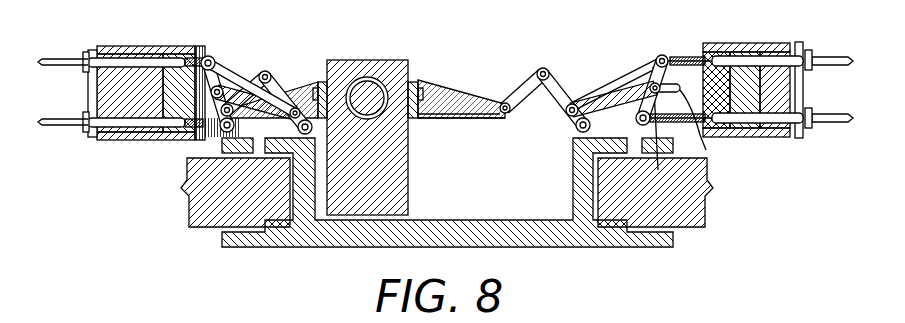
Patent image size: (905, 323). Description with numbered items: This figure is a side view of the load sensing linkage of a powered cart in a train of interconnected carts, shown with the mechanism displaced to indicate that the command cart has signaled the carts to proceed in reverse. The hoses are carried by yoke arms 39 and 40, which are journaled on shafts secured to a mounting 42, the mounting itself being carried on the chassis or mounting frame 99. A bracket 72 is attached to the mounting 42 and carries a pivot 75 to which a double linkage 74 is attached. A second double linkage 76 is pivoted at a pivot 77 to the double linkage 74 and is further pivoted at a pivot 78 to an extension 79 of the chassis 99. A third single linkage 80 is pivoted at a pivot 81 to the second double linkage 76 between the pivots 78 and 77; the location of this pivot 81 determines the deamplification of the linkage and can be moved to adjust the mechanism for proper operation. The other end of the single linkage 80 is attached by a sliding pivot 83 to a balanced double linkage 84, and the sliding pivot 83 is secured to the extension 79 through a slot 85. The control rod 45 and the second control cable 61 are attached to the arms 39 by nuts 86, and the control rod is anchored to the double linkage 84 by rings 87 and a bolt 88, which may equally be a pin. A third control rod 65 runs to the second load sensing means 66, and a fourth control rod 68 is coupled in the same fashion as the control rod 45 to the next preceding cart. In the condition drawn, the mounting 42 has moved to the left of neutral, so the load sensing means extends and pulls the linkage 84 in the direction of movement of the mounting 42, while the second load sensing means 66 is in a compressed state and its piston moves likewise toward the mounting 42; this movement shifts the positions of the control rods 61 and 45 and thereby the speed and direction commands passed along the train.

The yoke arm 39 is at (775, 92).
The yoke arm 40 is at (108, 88).
The mounting 42 is at (350, 60).
The control rod 45 is at (828, 55).
The second control cable 61 is at (830, 116).
The third control rod 65 is at (62, 130).
The second load sensing means 66 is at (432, 73).
The fourth control rod 68 is at (62, 56).
The bracket 72 is at (463, 120).
The double linkage 74 is at (513, 93).
The pivot 75 is at (504, 120).
The second double linkage 76 is at (556, 70).
The pivot 77 is at (528, 76).
The pivot 78 is at (580, 131).
The extension 79 is at (635, 85).
The third single linkage 80 is at (622, 95).
The pivot 81 is at (572, 114).
The sliding pivot 83 is at (230, 83).
The balanced double linkage 84 is at (652, 70).
The slot 85 is at (700, 132).
The nut 86 is at (808, 50).
The ring 87 is at (658, 162).
The bolt 88 is at (665, 58).
The chassis 99 is at (490, 220).